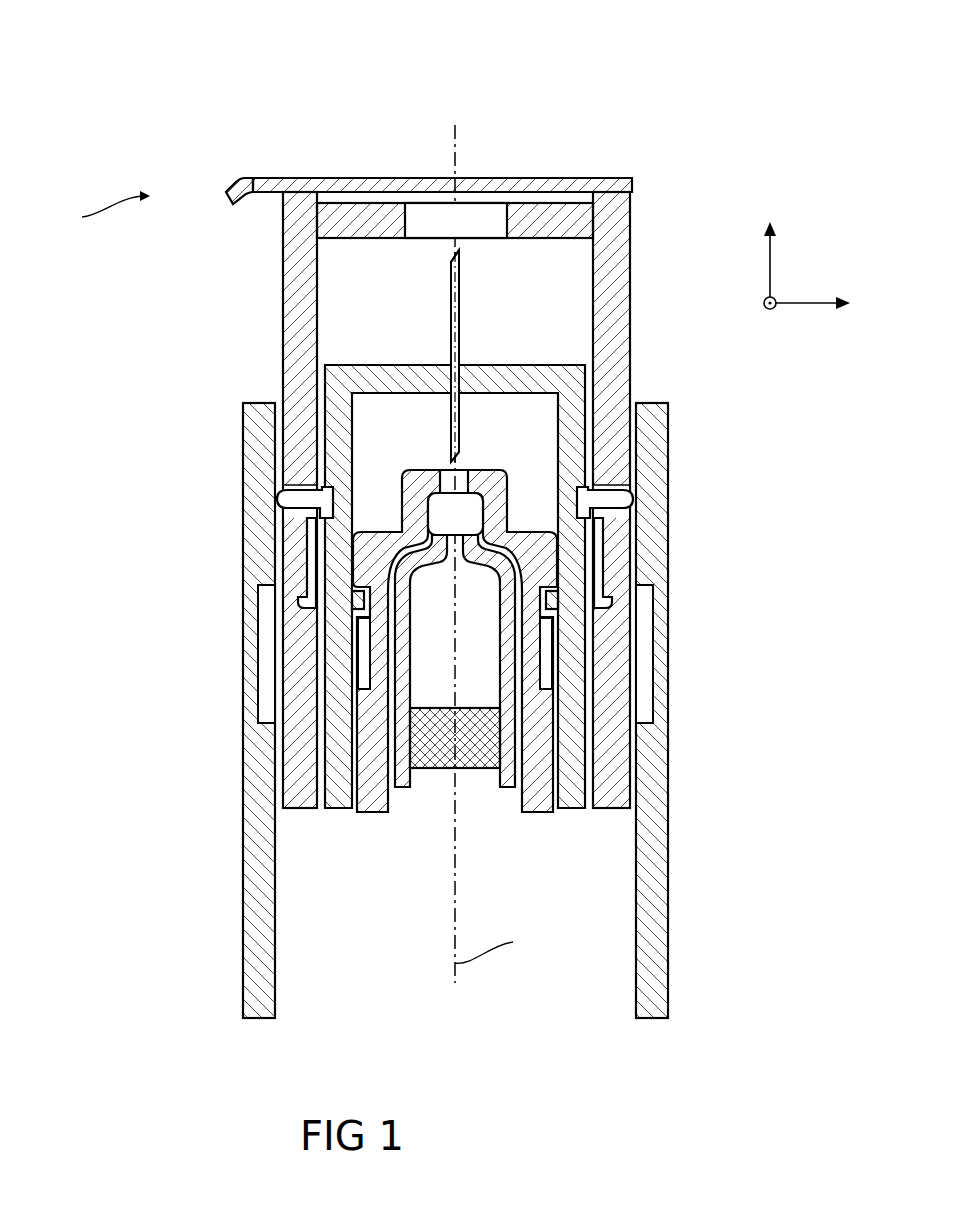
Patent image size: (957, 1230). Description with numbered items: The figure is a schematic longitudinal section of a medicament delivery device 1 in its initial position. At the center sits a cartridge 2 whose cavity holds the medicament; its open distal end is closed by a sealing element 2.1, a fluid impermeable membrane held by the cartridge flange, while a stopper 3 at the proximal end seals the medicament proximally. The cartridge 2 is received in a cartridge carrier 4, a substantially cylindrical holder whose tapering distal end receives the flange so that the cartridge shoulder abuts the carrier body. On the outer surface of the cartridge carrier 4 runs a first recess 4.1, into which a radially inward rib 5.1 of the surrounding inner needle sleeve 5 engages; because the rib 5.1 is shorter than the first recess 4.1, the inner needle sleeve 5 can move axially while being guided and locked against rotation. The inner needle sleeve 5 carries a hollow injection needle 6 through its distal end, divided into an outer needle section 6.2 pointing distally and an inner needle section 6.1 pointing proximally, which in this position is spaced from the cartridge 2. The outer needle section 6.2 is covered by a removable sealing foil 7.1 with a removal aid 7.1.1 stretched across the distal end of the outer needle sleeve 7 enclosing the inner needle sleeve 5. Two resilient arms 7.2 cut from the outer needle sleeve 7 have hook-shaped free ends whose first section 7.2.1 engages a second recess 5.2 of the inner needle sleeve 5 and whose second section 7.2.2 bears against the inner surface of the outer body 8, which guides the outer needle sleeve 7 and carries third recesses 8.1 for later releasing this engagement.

The medicament delivery device 1 is at (297, 83).
The cartridge 2 is at (554, 554).
The sealing element 2.1 is at (446, 470).
The stopper 3 is at (435, 765).
The cartridge carrier 4 is at (368, 641).
The first recess 4.1 is at (368, 650).
The inner needle sleeve 5 is at (402, 586).
The rib 5.1 is at (355, 597).
The second recess 5.2 is at (297, 490).
The injection needle 6 is at (562, 289).
The inner needle section 6.1 is at (455, 242).
The outer needle section 6.2 is at (462, 460).
The outer needle sleeve 7 is at (467, 452).
The sealing foil 7.1 is at (407, 150).
The removal aid 7.1.1 is at (237, 185).
The resilient arm 7.2 is at (467, 537).
The first section 7.2.1 is at (590, 503).
The second section 7.2.2 is at (640, 500).
The outer body 8 is at (457, 710).
The third recess 8.1 is at (263, 708).